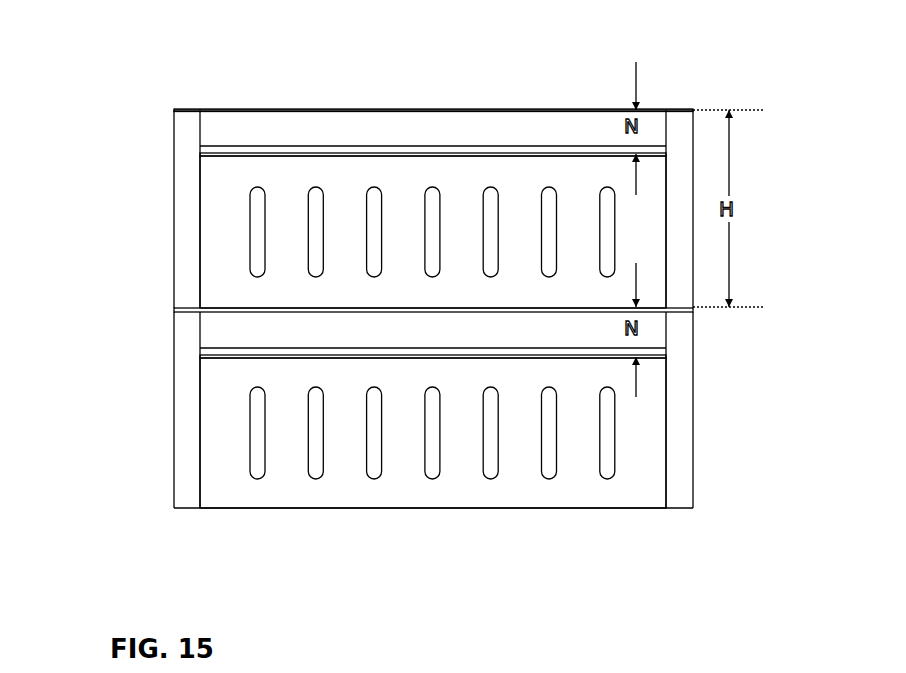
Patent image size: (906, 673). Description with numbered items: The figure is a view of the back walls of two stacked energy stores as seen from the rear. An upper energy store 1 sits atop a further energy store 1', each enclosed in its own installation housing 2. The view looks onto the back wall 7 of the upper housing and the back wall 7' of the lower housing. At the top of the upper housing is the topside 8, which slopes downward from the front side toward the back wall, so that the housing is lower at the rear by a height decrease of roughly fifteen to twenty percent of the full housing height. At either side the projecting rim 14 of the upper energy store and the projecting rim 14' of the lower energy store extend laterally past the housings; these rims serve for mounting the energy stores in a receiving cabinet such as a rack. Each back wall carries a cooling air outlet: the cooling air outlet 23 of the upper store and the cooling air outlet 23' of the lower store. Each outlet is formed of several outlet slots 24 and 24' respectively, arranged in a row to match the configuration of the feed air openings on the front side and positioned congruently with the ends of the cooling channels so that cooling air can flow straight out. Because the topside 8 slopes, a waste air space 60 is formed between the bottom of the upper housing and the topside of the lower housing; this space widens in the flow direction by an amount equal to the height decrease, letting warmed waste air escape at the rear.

The energy store 1 is at (373, 60).
The further energy store 1' is at (373, 507).
The installation housing 2 is at (186, 110).
The back wall 7 is at (433, 173).
The back wall of the further energy store 7' is at (433, 469).
The topside 8 is at (503, 108).
The projecting rim 14 is at (144, 209).
The projecting rim of the further energy store 14' is at (426, 446).
The cooling air outlet 23 is at (316, 159).
The cooling air outlet of the further energy store 23' is at (316, 483).
The outlet slots 24 is at (496, 159).
The outlet slots of the further energy store 24' is at (495, 483).
The waste air space 60 is at (249, 321).